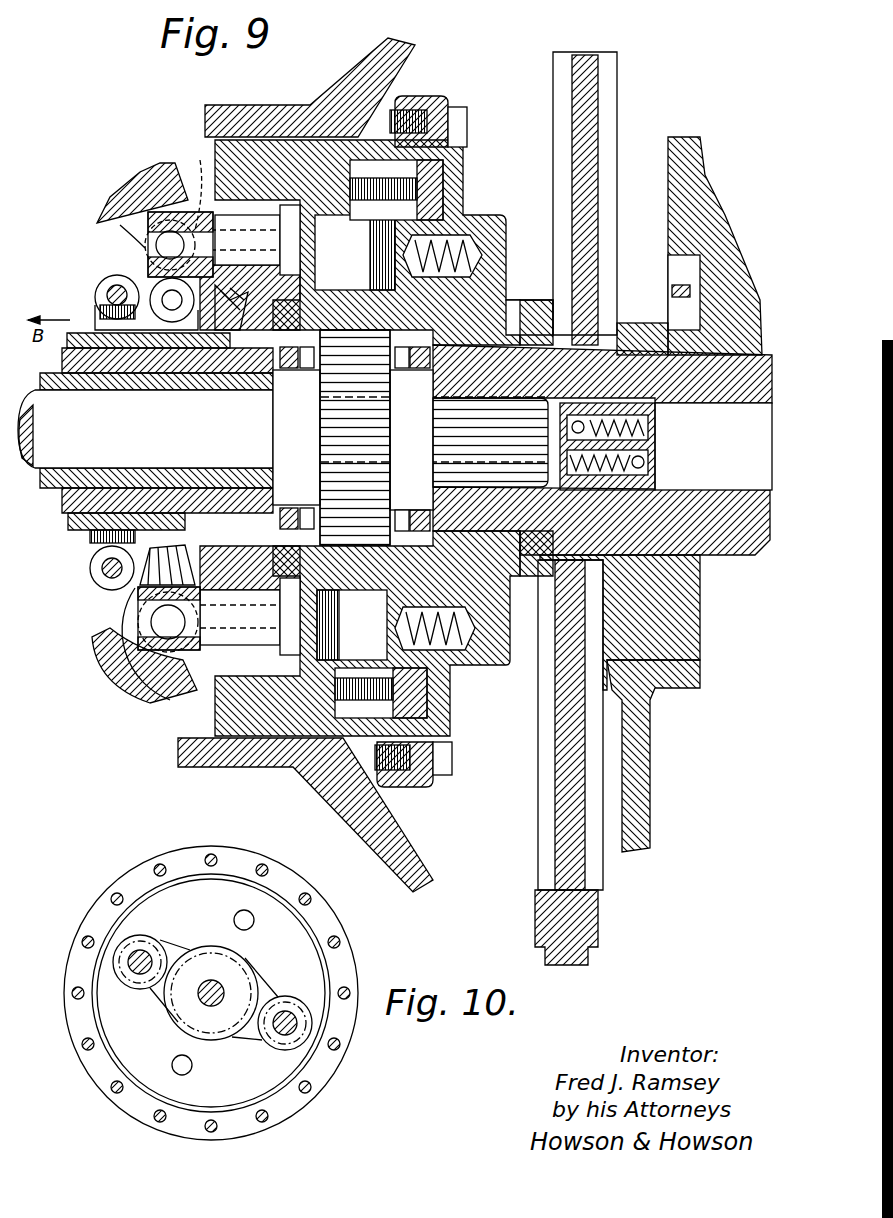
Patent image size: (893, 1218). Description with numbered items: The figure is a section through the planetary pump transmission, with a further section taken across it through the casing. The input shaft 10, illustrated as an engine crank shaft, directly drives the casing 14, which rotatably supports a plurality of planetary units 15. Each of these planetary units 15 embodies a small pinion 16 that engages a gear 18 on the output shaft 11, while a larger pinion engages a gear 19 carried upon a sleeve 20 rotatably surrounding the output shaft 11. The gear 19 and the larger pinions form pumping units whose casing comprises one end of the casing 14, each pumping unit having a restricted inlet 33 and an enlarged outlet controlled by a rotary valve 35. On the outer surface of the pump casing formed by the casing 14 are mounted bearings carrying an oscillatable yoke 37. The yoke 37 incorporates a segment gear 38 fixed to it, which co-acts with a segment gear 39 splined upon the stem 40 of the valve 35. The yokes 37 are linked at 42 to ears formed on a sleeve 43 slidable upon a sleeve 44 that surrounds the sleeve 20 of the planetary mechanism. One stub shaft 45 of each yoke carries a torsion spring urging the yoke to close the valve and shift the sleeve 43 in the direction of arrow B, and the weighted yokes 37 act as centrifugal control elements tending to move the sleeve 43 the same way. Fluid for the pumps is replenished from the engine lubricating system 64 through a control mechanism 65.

In FIG. 9, the input shaft 10 is at (455, 63).
In FIG. 9, the output shaft 11 is at (136, 441).
In FIG. 10, the output shaft 11 is at (211, 984).
In FIG. 9, the casing 14 is at (290, 150).
In FIG. 10, the casing 14 is at (102, 902).
In FIG. 10, the planetary units 15 is at (143, 985).
In FIG. 10, the small pinion 16 is at (148, 940).
In FIG. 9, the gear 18 is at (485, 315).
In FIG. 10, the gear 18 is at (260, 963).
In FIG. 9, the gear 19 is at (330, 437).
In FIG. 9, the sleeve 20 is at (62, 477).
In FIG. 9, the restricted inlet 33 is at (440, 290).
In FIG. 9, the valve 35 is at (366, 266).
In FIG. 9, the yoke 37 is at (140, 190).
In FIG. 9, the segment gear 38 is at (140, 585).
In FIG. 9, the segment gear 39 is at (256, 275).
In FIG. 9, the stem 40 is at (148, 246).
In FIG. 9, the link 42 is at (148, 275).
In FIG. 9, the sleeve 43 is at (92, 538).
In FIG. 9, the sleeve 44 is at (85, 510).
In FIG. 9, the stub shaft 45 is at (199, 186).
In FIG. 9, the lubricating system 64 is at (748, 451).
In FIG. 9, the control mechanism 65 is at (650, 450).